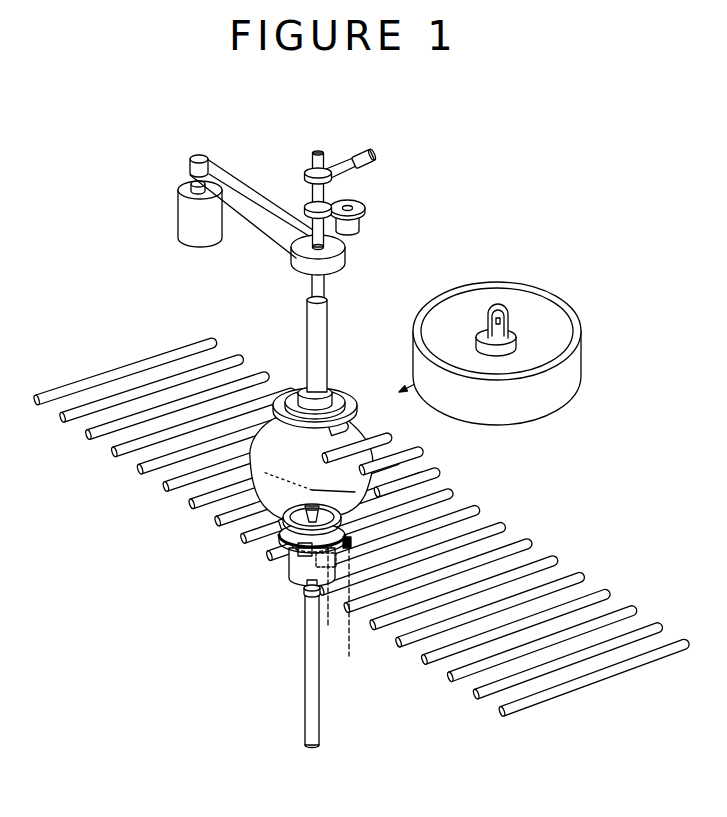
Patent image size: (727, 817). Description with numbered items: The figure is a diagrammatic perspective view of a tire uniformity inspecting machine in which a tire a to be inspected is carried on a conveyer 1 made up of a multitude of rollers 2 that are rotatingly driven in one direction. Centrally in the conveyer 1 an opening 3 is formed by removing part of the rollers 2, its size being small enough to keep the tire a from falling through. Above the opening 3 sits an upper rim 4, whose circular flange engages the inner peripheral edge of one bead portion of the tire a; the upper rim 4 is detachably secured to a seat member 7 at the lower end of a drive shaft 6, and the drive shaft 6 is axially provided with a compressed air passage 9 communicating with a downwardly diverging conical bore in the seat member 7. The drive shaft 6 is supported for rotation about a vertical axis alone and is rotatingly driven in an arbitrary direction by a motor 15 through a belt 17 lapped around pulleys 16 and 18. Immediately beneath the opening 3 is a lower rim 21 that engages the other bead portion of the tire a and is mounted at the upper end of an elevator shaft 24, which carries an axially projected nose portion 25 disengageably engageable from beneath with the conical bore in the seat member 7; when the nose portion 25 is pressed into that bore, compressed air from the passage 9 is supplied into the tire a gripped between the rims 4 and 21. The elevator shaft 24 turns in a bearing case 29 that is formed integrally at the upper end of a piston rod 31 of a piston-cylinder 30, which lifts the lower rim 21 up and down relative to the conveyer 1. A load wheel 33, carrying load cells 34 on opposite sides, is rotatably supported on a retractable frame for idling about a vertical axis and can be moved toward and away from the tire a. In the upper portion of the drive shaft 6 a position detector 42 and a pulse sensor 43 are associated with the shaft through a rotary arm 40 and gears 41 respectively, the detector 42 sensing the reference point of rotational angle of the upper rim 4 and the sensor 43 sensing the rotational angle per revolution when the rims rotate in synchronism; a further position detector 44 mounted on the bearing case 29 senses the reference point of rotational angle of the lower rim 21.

The conveyer 1 is at (361, 519).
The rollers 2 is at (192, 371).
The opening 3 is at (262, 471).
The upper rim 4 is at (358, 403).
The drive shaft 6 is at (328, 328).
The seat member 7 is at (296, 388).
The compressed air passage 9 is at (318, 152).
The motor 15 is at (190, 226).
The pulley 16 is at (190, 161).
The belt 17 is at (272, 203).
The pulley 18 is at (337, 245).
The lower rim 21 is at (368, 492).
The elevator shaft 24 is at (290, 578).
The nose portion 25 is at (266, 470).
The bearing case 29 is at (332, 598).
The piston-cylinder 30 is at (300, 715).
The piston rod 31 is at (305, 594).
The load wheel 33 is at (543, 397).
The load cells 34 is at (510, 312).
The rotary arm 40 is at (336, 167).
The gears 41 is at (336, 202).
The position detector 42 is at (372, 163).
The pulse sensor 43 is at (363, 224).
The position detector 44 is at (347, 607).
The tire a is at (390, 441).